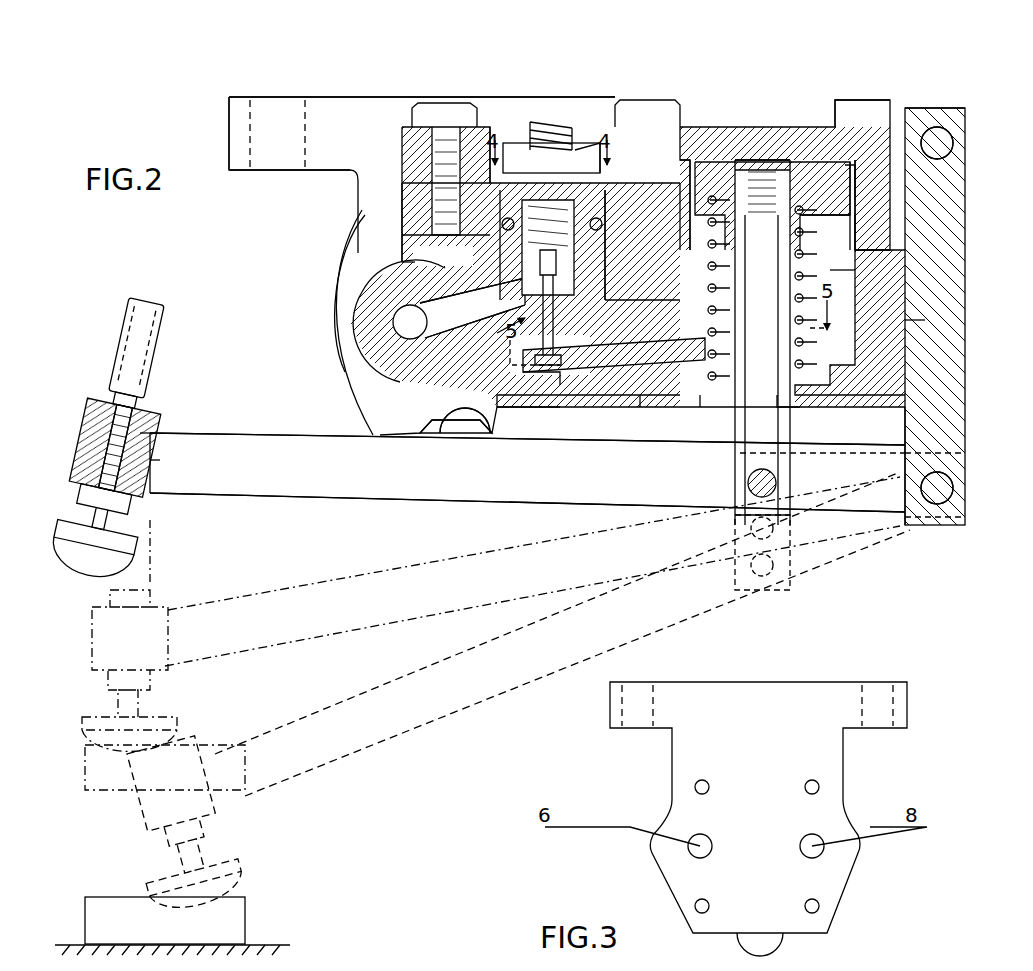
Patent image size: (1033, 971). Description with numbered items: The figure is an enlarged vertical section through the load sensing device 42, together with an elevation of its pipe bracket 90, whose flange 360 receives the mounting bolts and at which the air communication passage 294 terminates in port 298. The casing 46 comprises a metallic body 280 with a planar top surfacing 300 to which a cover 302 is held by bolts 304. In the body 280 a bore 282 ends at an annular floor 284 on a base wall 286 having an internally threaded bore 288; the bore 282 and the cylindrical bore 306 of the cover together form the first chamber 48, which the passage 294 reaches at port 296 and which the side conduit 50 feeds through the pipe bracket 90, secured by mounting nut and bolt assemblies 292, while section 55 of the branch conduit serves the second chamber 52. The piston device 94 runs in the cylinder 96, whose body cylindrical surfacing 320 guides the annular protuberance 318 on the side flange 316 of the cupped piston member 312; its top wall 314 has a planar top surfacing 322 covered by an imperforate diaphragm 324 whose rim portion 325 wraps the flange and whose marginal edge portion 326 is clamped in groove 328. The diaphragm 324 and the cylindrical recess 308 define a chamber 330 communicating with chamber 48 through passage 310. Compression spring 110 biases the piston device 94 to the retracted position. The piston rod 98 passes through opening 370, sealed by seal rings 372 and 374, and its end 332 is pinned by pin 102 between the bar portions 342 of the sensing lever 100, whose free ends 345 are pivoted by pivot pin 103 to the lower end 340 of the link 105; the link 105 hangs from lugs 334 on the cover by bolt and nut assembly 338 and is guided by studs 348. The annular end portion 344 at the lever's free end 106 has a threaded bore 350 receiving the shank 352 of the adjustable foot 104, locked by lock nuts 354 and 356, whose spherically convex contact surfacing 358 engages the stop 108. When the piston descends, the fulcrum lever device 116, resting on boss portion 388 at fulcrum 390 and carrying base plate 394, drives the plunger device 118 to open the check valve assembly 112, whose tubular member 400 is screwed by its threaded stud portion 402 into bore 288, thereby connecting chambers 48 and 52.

In FIG. 2, the load sensing device 42 is at (252, 70).
In FIG. 2, the casing 46 is at (748, 120).
In FIG. 2, the first chamber 48 is at (510, 142).
In FIG. 3, the side conduit 50 is at (618, 826).
In FIG. 2, the second chamber 52 is at (420, 340).
In FIG. 3, the section of branch conduit 55 is at (882, 826).
In FIG. 3, the pipe bracket 90 is at (640, 756).
In FIG. 2, the piston device 94 is at (802, 145).
In FIG. 2, the cylinder 96 is at (870, 262).
In FIG. 2, the piston rod 98 is at (750, 460).
In FIG. 2, the sensing lever 100 is at (467, 484).
In FIG. 2, the pin 102 is at (755, 500).
In FIG. 2, the pivot pin 103 is at (920, 530).
In FIG. 2, the adjustable foot 104 is at (172, 550).
In FIG. 2, the link 105 is at (915, 330).
In FIG. 2, the free end 106 is at (210, 447).
In FIG. 2, the stop 108 is at (100, 768).
In FIG. 2, the compression spring 110 is at (855, 328).
In FIG. 2, the check valve assembly 112 is at (585, 142).
In FIG. 2, the fulcrum lever device 116 is at (575, 412).
In FIG. 2, the plunger device 118 is at (438, 386).
In FIG. 2, the metallic body 280 is at (340, 292).
In FIG. 2, the bore 282 is at (620, 215).
In FIG. 2, the annular floor 284 is at (632, 245).
In FIG. 2, the base wall 286 is at (446, 251).
In FIG. 2, the internally threaded bore 288 is at (336, 320).
In FIG. 2, the mounting nut and bolt assemblies 292 is at (420, 432).
In FIG. 2, the air communication passage 294 is at (475, 232).
In FIG. 2, the port 296 is at (445, 210).
In FIG. 3, the port 298 is at (714, 840).
In FIG. 2, the planar top surfacing 300 is at (870, 180).
In FIG. 2, the cover 302 is at (712, 165).
In FIG. 2, the bolts 304 is at (443, 103).
In FIG. 2, the cylindrical bore 306 is at (525, 140).
In FIG. 2, the cylindrical recess 308 is at (815, 170).
In FIG. 2, the passage 310 is at (645, 150).
In FIG. 2, the piston member 312 is at (790, 165).
In FIG. 2, the top wall 314 is at (730, 170).
In FIG. 2, the side flange 316 is at (870, 232).
In FIG. 2, the annular protuberance 318 is at (880, 242).
In FIG. 2, the body cylindrical surfacing 320 is at (665, 275).
In FIG. 2, the planar top surfacing 322 is at (683, 160).
In FIG. 2, the imperforate diaphragm 324 is at (770, 175).
In FIG. 2, the rim portion 325 is at (855, 170).
In FIG. 2, the marginal edge portion 326 is at (858, 195).
In FIG. 2, the groove 328 is at (860, 205).
In FIG. 2, the chamber 330 is at (665, 160).
In FIG. 2, the piston rod end 332 is at (790, 560).
In FIG. 2, the spaced apart lugs 334 is at (912, 108).
In FIG. 2, the bolt and nut assembly 338 is at (955, 112).
In FIG. 2, the lower end 340 is at (950, 522).
In FIG. 2, the bar portions 342 is at (383, 482).
In FIG. 2, the annular end portion 344 is at (90, 440).
In FIG. 2, the free ends 345 is at (890, 512).
In FIG. 2, the spaced apart studs 348 is at (917, 405).
In FIG. 2, the internally threaded bore 350 is at (140, 440).
In FIG. 2, the shank 352 is at (160, 462).
In FIG. 2, the lock nut 354 is at (160, 497).
In FIG. 2, the lock nut 356 is at (105, 395).
In FIG. 2, the contact surfacing 358 is at (150, 545).
In FIG. 2, the flange 360 is at (330, 102).
In FIG. 2, the opening 370 is at (790, 436).
In FIG. 2, the seal ring 372 is at (660, 412).
In FIG. 2, the seal ring 374 is at (700, 412).
In FIG. 2, the boss portion 388 is at (625, 412).
In FIG. 2, the fulcrum 390 is at (612, 378).
In FIG. 2, the base plate 394 is at (485, 423).
In FIG. 2, the tubular member 400 is at (578, 280).
In FIG. 2, the threaded stud portion 402 is at (405, 270).